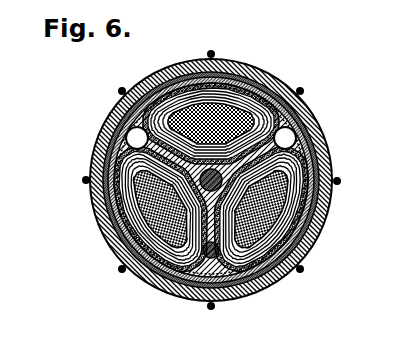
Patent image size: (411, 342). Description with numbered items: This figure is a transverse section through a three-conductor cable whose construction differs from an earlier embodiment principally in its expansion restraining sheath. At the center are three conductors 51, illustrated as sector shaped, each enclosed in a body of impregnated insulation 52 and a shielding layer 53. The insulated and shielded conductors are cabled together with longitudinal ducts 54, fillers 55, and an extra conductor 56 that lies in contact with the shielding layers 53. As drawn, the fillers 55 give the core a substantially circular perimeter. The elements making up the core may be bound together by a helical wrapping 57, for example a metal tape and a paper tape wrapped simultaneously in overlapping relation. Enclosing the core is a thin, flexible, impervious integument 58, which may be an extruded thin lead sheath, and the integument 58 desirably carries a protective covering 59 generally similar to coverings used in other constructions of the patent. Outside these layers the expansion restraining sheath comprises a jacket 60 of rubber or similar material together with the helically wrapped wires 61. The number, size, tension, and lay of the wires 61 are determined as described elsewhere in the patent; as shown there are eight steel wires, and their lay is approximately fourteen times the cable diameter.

The conductor 51 is at (268, 215).
The body of impregnated insulation 52 is at (273, 232).
The shielding layer 53 is at (172, 75).
The longitudinal duct 54 is at (313, 118).
The filler 55 is at (192, 298).
The extra conductor 56 is at (235, 298).
The helical wrapping 57 is at (312, 203).
The integument 58 is at (313, 157).
The protective covering 59 is at (320, 143).
The jacket 60 is at (316, 134).
The helically wrapped wires 61 is at (300, 90).